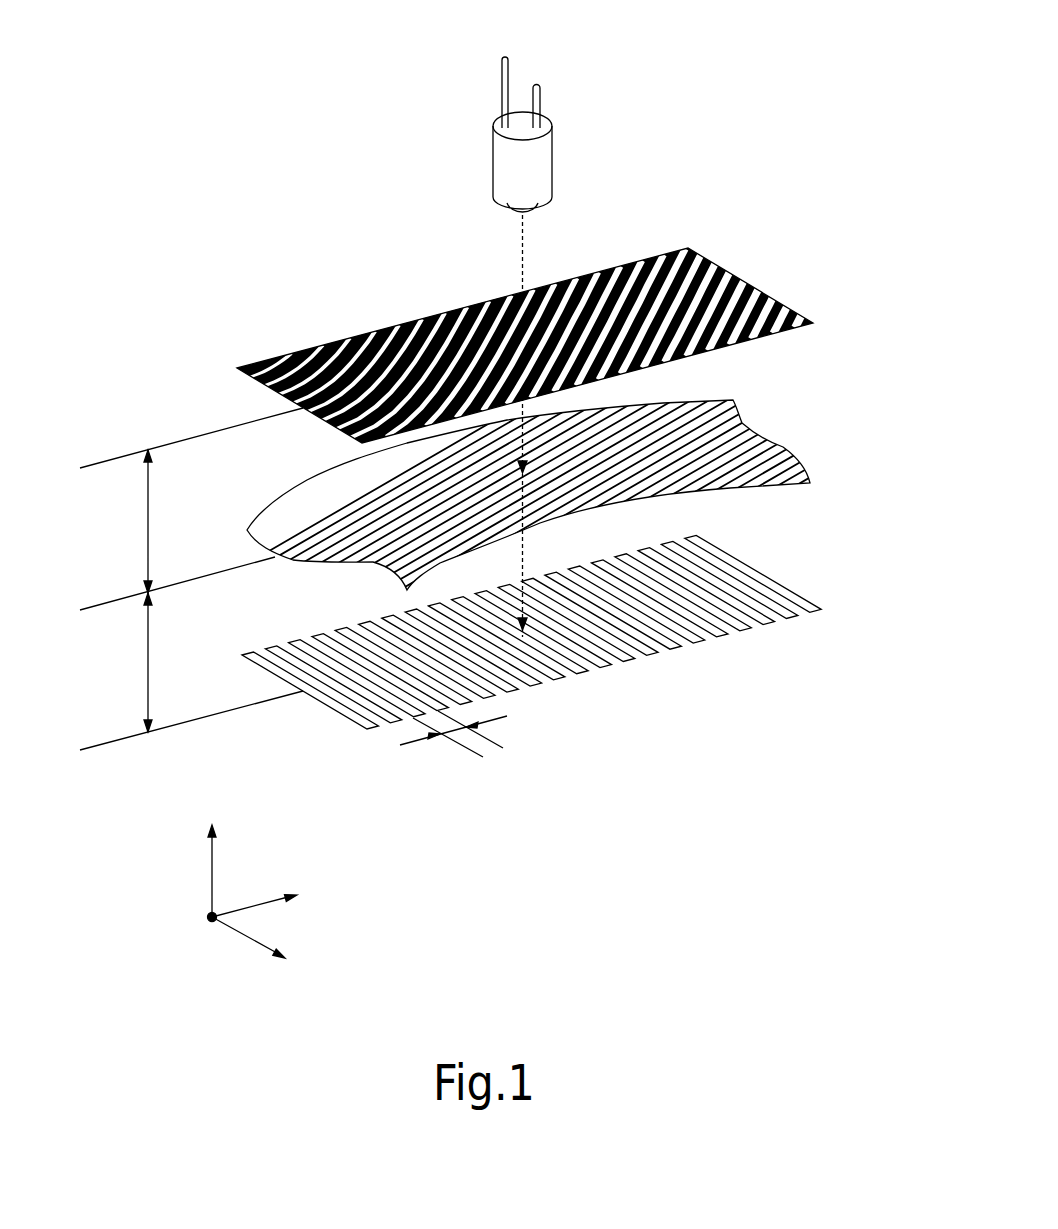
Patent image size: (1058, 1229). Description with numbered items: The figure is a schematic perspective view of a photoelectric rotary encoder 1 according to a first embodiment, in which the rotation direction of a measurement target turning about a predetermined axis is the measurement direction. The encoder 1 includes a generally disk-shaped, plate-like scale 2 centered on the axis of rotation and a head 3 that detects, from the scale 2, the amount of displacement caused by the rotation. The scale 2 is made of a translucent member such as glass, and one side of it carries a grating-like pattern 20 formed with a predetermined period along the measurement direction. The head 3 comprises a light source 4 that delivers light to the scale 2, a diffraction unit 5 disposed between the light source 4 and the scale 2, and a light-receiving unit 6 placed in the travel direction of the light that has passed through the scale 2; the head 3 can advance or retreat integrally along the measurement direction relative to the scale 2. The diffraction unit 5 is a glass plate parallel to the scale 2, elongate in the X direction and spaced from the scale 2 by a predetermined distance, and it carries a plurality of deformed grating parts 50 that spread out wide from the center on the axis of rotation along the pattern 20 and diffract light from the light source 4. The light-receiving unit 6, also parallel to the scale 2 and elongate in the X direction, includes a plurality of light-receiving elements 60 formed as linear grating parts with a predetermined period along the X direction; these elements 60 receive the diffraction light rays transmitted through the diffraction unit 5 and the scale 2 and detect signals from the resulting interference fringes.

The photoelectric rotary encoder 1 is at (842, 103).
The scale 2 is at (823, 430).
The head 3 is at (577, 415).
The light source 4 is at (495, 165).
The diffraction unit 5 is at (782, 266).
The light-receiving unit 6 is at (823, 592).
The grating-like pattern 20 is at (700, 492).
The grating parts 50 is at (323, 340).
The light-receiving elements 60 is at (737, 630).